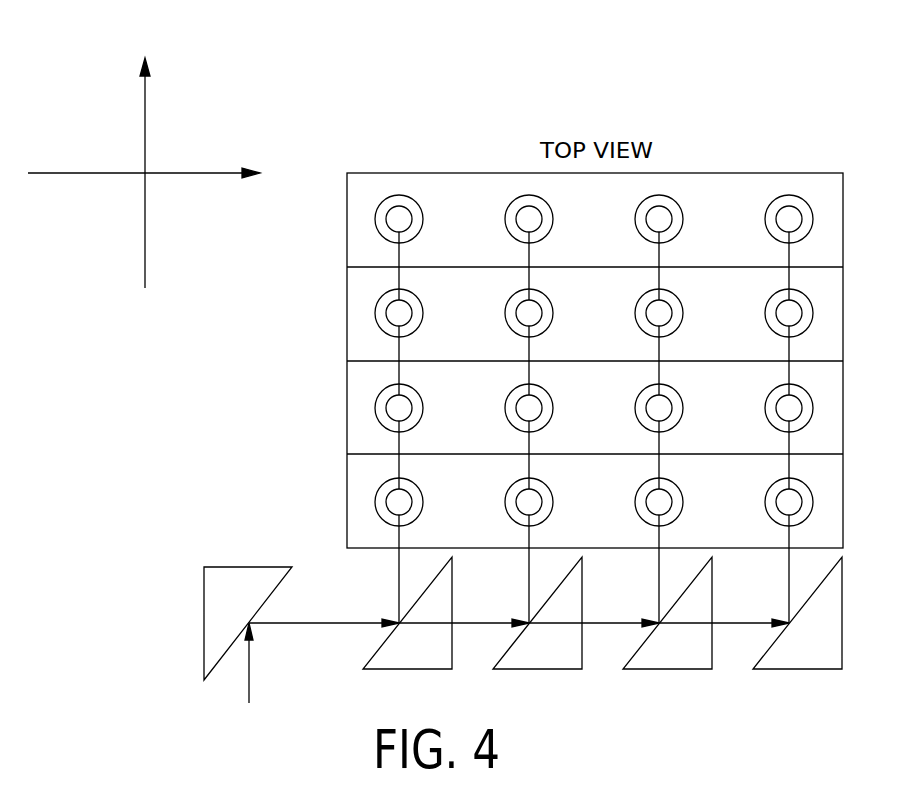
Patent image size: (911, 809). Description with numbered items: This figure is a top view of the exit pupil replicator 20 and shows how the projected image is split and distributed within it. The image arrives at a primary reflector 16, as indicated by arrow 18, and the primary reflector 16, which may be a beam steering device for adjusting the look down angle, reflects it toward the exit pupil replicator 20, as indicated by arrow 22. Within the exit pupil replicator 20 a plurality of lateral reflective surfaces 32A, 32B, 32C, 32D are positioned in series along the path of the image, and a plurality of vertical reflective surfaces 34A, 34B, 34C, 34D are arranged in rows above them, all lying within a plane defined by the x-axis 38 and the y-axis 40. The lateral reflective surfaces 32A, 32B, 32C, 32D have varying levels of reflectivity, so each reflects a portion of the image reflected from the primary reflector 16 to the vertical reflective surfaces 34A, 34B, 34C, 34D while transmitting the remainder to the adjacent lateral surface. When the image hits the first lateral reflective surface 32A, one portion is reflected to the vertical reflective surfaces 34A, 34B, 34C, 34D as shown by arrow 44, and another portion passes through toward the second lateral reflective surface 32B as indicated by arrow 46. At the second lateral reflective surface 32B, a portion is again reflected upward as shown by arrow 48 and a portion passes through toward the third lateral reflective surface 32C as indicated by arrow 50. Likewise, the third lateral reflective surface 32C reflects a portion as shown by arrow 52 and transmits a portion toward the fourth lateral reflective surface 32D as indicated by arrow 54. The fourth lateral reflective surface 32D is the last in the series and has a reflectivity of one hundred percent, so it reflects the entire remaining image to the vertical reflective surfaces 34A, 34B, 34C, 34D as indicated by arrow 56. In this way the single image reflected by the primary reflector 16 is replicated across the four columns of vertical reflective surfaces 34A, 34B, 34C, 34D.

The primary reflector 16 is at (244, 614).
The arrow 18 is at (249, 672).
The exit pupil replicator 20 is at (347, 342).
The arrow 22 is at (290, 623).
The first lateral reflective surface 32A is at (441, 657).
The second lateral reflective surface 32B is at (571, 657).
The third lateral reflective surface 32C is at (701, 657).
The fourth lateral reflective surface 32D is at (831, 657).
The vertical reflective surface 34A is at (617, 514).
The vertical reflective surface 34B is at (617, 420).
The vertical reflective surface 34C is at (617, 325).
The vertical reflective surface 34D is at (617, 231).
The x-axis 38 is at (190, 173).
The y-axis 40 is at (145, 115).
The arrow 44 is at (399, 573).
The arrow 46 is at (478, 625).
The arrow 48 is at (529, 573).
The arrow 50 is at (608, 625).
The arrow 52 is at (659, 573).
The arrow 54 is at (738, 625).
The arrow 56 is at (789, 573).